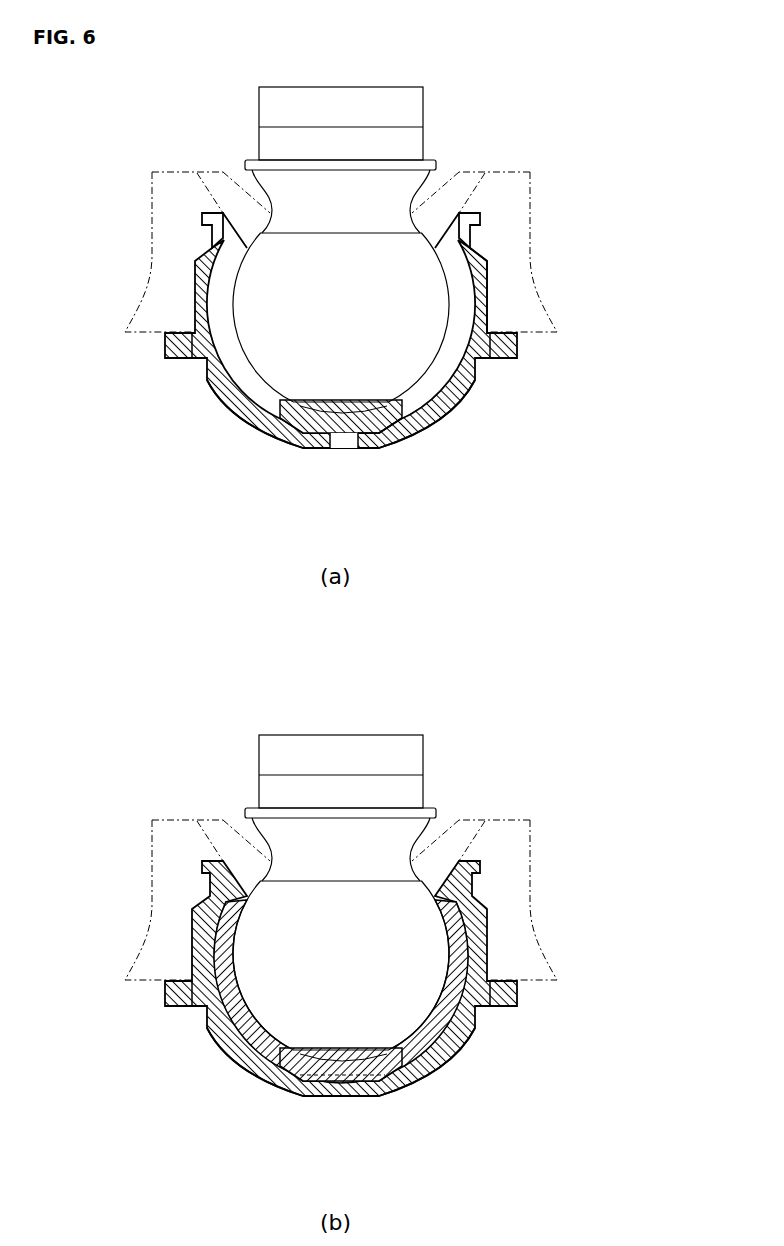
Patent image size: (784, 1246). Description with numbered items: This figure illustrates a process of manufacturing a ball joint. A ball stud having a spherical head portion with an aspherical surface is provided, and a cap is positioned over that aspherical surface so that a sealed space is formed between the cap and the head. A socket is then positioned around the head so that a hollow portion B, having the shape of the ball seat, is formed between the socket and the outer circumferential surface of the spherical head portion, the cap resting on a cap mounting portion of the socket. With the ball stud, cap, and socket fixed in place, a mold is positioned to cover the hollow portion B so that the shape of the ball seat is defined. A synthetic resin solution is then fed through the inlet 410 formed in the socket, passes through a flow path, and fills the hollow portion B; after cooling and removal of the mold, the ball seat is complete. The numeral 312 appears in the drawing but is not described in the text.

The seat bottom portion 312 is at (360, 437).
The inlet 410 is at (353, 450).
The hollow portion B is at (460, 297).